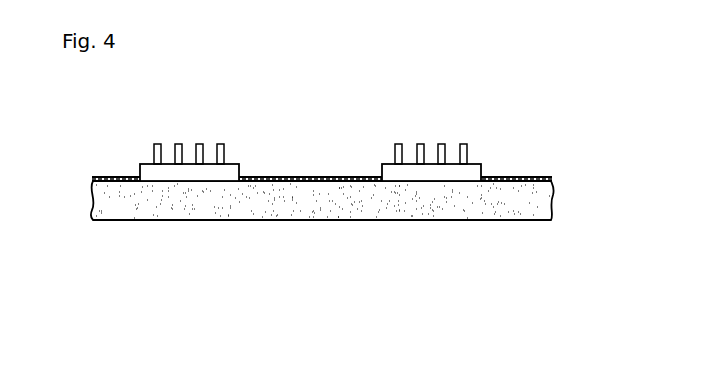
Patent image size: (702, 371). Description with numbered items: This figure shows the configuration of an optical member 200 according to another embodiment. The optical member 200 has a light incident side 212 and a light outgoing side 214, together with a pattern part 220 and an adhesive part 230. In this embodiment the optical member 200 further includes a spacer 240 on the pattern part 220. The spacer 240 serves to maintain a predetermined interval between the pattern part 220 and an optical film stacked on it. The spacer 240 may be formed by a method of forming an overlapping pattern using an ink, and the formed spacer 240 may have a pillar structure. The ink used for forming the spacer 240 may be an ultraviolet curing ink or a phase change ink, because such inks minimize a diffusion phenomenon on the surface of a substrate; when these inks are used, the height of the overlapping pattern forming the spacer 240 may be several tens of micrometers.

The optical member 200 is at (80, 101).
The light incident side 212 is at (125, 220).
The light outgoing side 214 is at (102, 182).
The pattern part 220 is at (407, 172).
The adhesive part 230 is at (527, 178).
The spacer 240 is at (225, 143).